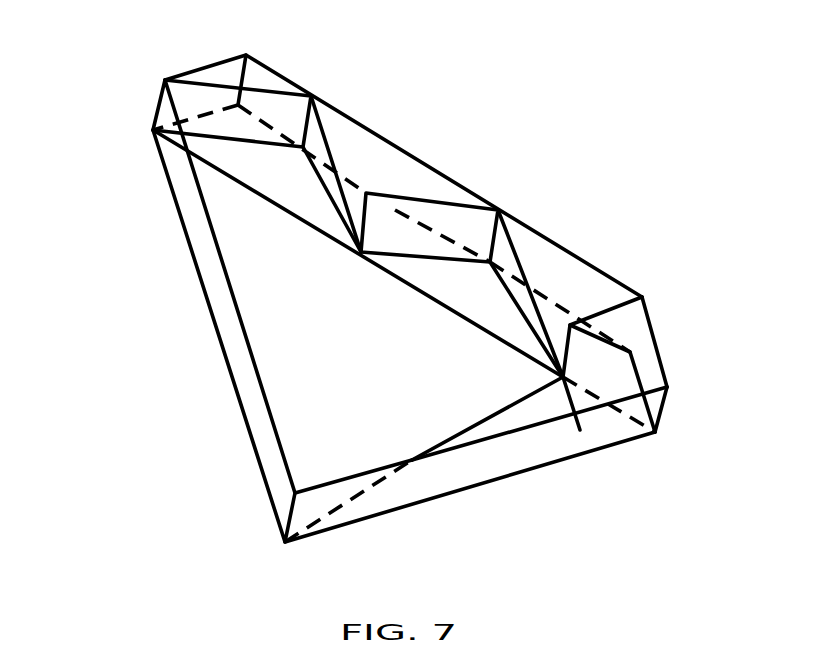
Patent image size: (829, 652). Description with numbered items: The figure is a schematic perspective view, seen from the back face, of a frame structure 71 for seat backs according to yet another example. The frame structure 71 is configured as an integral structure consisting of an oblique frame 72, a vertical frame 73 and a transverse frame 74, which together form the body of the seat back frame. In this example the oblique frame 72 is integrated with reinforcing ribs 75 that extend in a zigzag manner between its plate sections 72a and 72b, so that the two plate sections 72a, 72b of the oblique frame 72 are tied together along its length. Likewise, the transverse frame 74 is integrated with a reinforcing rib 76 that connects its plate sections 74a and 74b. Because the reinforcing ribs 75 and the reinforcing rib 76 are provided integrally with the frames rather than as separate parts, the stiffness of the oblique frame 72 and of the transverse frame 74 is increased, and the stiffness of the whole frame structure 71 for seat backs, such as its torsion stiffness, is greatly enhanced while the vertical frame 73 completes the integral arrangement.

The frame structure for seat backs 71 is at (410, 310).
The oblique frame 72 is at (410, 243).
The plate section 72a is at (466, 299).
The plate section 72b is at (558, 267).
The vertical frame 73 is at (213, 288).
The transverse frame 74 is at (476, 472).
The plate section 74a is at (546, 452).
The plate section 74b is at (540, 405).
The reinforcing ribs 75 is at (393, 232).
The reinforcing rib 76 is at (588, 444).